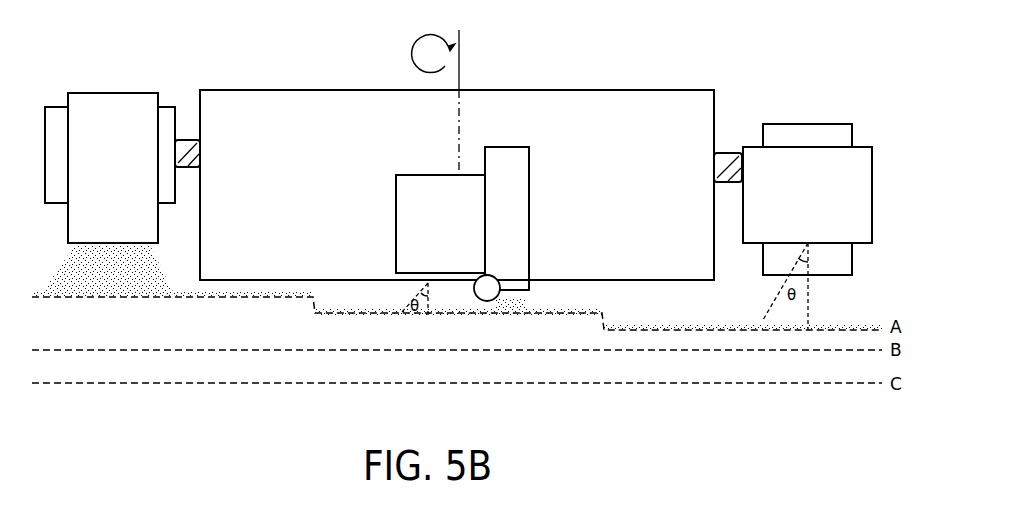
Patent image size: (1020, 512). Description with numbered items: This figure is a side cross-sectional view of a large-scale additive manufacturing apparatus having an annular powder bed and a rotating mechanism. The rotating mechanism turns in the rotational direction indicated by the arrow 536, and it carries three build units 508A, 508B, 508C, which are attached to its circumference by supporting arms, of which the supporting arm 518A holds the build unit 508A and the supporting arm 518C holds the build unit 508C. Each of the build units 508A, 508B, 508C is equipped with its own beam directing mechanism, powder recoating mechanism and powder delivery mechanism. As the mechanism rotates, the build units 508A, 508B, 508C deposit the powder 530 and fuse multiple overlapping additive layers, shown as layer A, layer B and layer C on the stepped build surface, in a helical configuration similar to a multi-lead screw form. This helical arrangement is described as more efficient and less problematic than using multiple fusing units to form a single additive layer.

The build unit 508A is at (860, 145).
The build unit 508B is at (415, 174).
The build unit 508C is at (89, 93).
The supporting arm 518A is at (723, 152).
The supporting arm 518C is at (180, 138).
The powder 530 is at (90, 275).
The arrow indicating rotational direction 536 is at (448, 78).